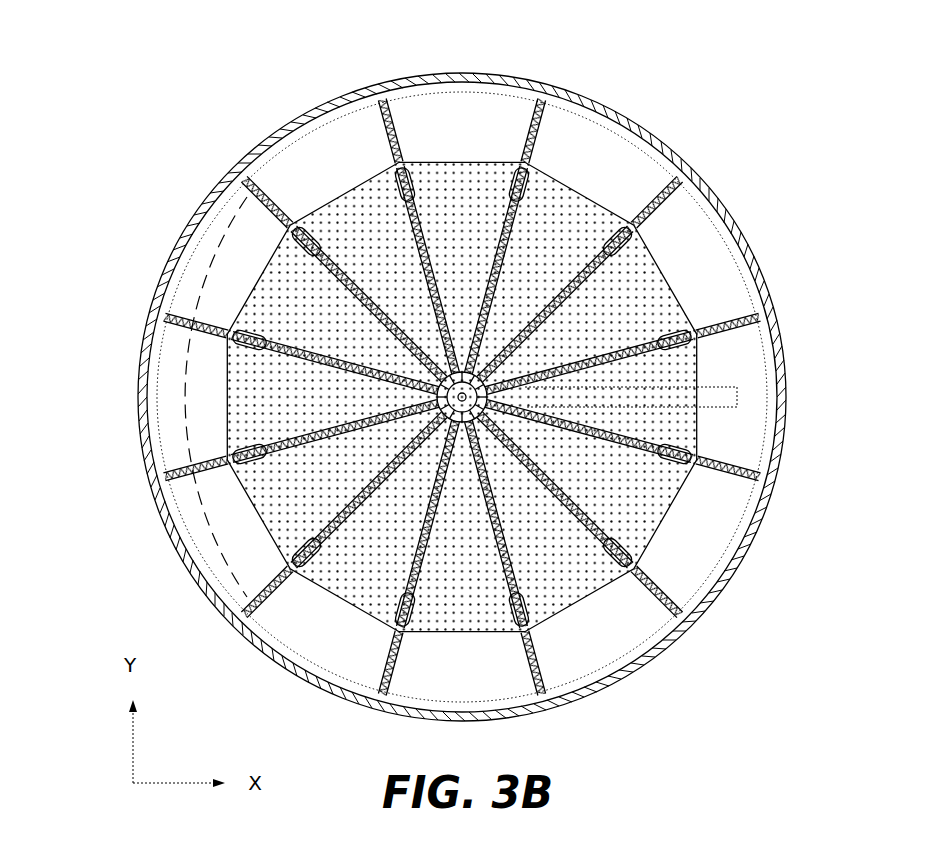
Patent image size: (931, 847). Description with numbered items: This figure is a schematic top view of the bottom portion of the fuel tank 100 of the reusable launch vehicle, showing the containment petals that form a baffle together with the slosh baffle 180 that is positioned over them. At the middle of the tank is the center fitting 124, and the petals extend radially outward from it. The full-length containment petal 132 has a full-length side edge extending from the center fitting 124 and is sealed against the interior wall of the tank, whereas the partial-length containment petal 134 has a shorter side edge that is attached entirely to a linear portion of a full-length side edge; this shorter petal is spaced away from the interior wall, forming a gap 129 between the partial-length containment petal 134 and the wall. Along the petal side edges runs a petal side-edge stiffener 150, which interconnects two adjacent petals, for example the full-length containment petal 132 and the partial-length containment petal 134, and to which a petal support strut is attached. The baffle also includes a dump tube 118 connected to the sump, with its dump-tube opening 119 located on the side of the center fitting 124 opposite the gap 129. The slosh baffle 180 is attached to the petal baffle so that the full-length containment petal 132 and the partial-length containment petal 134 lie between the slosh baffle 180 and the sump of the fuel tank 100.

The fuel tank 100 is at (673, 123).
The dump tube 118 is at (668, 386).
The dump-tube opening 119 is at (740, 396).
The center fitting 124 is at (490, 327).
The gap 129 is at (170, 383).
The full-length containment petal 132 is at (672, 283).
The partial-length containment petal 134 is at (245, 428).
The petal side-edge stiffener 150 is at (608, 347).
The slosh baffle 180 is at (702, 248).